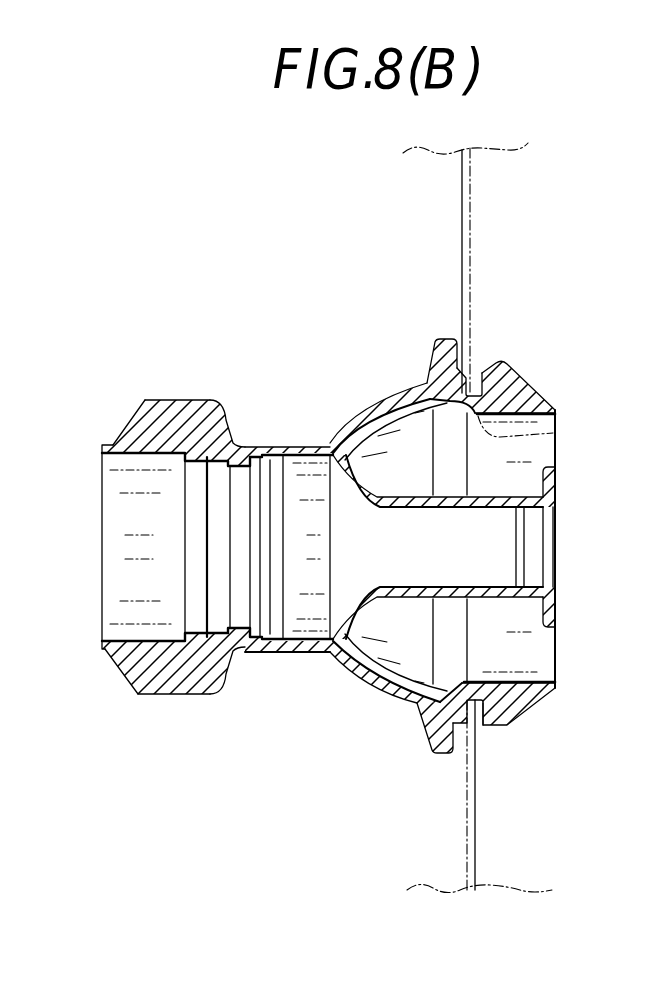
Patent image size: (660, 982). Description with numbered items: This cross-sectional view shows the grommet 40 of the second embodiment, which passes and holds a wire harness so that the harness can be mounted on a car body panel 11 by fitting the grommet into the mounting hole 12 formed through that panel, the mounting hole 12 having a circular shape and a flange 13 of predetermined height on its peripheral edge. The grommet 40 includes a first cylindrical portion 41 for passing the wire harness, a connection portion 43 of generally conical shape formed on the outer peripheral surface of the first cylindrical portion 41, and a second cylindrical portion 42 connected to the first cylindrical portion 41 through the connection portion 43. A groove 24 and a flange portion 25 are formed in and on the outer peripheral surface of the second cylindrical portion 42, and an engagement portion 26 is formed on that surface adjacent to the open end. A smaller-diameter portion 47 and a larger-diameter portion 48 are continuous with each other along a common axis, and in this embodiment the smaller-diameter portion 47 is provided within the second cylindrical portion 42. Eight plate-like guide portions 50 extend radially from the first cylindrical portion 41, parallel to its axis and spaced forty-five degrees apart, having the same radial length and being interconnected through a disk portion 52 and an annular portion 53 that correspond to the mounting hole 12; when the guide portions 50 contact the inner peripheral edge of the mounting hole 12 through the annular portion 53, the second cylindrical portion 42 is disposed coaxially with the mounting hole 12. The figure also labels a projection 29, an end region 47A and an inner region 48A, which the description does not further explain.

The car body panel 11 is at (460, 182).
The mounting hole 12 is at (553, 432).
The flange 13 is at (480, 374).
The groove 24 is at (491, 741).
The flange portion 25 is at (453, 750).
The engagement portion 26 is at (522, 705).
The projection 29 is at (430, 350).
The grommet 40 is at (548, 270).
The first cylindrical portion 41 is at (280, 653).
The second cylindrical portion 42 is at (548, 370).
The connection portion 43 is at (357, 680).
The smaller-diameter portion 47 is at (503, 600).
The inner sleeve end wall 47A is at (523, 540).
The larger-diameter portion 48 is at (103, 650).
The bore 48A is at (273, 577).
The guide portions 50 is at (137, 425).
The disk portion 52 is at (232, 430).
The annular portion 53 is at (180, 398).